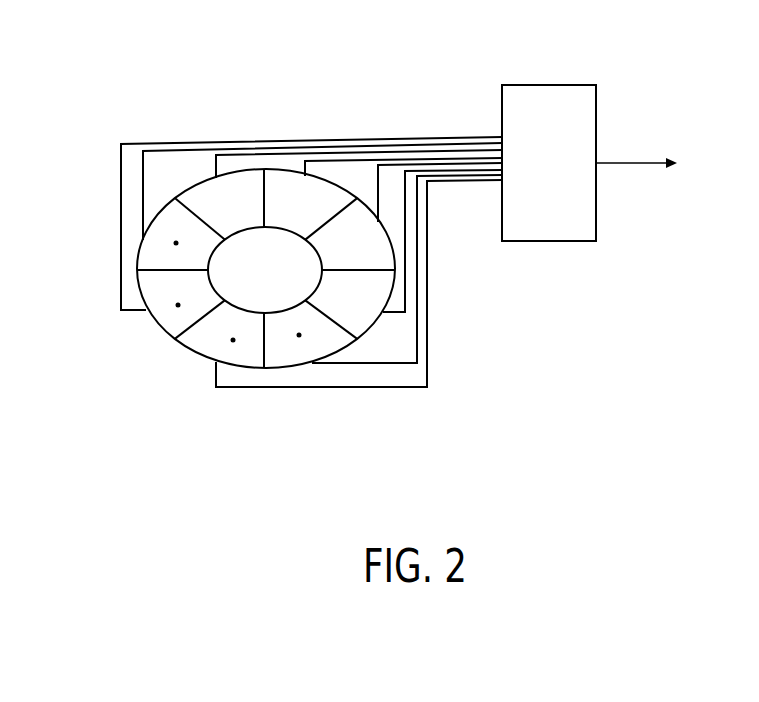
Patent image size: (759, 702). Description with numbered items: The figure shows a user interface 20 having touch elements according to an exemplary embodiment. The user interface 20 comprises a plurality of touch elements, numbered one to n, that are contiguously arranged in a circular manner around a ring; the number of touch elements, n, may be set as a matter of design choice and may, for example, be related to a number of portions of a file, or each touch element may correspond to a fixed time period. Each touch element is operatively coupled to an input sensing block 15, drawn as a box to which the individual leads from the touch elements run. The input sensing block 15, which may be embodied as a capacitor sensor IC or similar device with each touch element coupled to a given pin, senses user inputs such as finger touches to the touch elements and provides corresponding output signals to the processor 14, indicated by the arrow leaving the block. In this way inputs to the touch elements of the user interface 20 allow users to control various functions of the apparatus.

The processor 14 is at (670, 163).
The input sensing block 15 is at (547, 85).
The user interface 20 is at (178, 346).